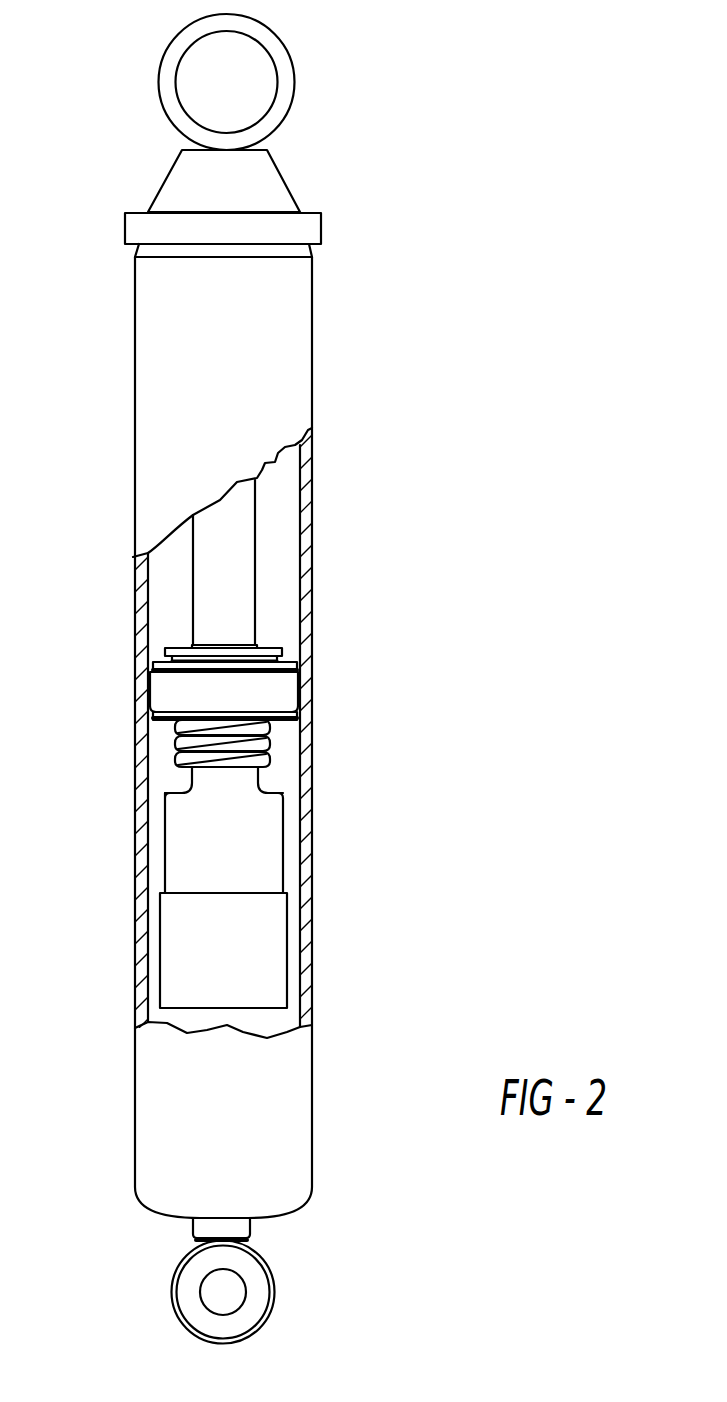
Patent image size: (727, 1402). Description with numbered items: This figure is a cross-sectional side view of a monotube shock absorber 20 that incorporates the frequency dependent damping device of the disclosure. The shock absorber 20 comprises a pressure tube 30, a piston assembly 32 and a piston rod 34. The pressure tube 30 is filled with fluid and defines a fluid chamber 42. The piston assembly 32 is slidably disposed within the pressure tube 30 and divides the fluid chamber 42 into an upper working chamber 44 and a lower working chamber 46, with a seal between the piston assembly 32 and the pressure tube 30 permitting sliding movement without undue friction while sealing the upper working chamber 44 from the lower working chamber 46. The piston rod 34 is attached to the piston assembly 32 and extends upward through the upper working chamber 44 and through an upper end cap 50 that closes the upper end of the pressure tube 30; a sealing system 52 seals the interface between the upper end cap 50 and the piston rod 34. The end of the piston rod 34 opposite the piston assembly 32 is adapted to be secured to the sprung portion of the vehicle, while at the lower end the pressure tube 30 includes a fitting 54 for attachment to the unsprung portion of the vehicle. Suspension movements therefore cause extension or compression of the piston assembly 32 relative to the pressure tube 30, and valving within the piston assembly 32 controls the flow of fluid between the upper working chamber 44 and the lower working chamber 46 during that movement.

The shock absorber 20 is at (410, 208).
The pressure tube 30 is at (305, 478).
The piston assembly 32 is at (273, 693).
The piston rod 34 is at (232, 543).
The fluid chamber 42 is at (267, 590).
The upper working chamber 44 is at (168, 588).
The lower working chamber 46 is at (277, 1018).
The upper end cap 50 is at (280, 172).
The sealing system 52 is at (125, 226).
The fitting 54 is at (172, 1285).